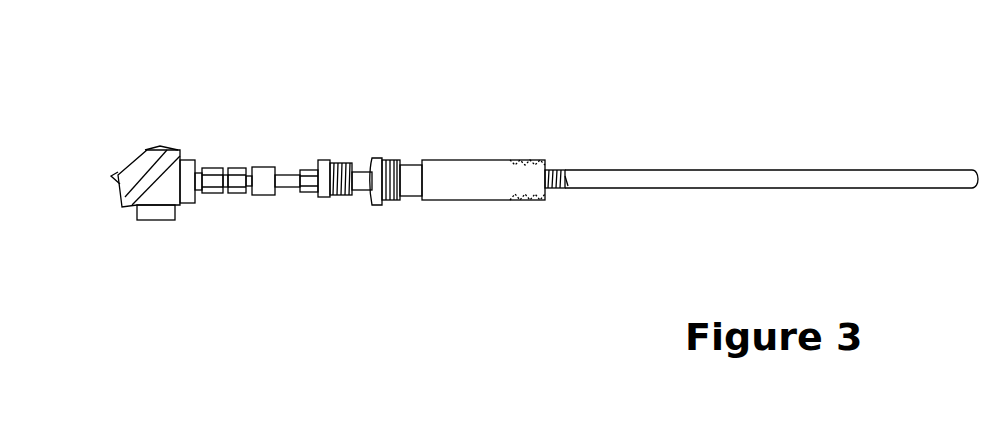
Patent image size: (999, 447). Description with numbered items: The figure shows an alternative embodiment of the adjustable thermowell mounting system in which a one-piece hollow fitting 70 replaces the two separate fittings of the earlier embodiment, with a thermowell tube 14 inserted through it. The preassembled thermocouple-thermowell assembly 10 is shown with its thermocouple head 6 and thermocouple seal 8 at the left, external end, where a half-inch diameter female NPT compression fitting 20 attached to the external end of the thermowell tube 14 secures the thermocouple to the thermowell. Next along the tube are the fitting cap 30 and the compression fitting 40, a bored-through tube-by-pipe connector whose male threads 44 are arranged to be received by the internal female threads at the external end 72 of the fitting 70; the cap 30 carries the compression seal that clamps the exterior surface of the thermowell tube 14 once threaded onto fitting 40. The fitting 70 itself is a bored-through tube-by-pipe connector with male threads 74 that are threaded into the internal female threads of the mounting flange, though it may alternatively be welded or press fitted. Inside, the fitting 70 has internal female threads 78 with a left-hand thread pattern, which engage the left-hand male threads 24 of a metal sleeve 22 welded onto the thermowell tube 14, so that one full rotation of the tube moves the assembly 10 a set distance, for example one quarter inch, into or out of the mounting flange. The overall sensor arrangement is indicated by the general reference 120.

The thermocouple head 6 is at (147, 148).
The thermocouple seal 8 is at (230, 160).
The thermocouple-thermowell assembly 10 is at (262, 279).
The thermowell tube 14 is at (786, 170).
The female NPT compression fitting 20 is at (260, 195).
The metal sleeve 22 is at (568, 178).
The male threads 24 is at (550, 170).
The fitting cap 30 is at (295, 162).
The compression fitting 40 is at (320, 198).
The male threads 44 is at (345, 198).
The one-piece hollow fitting 70 is at (434, 200).
The external end 72 is at (374, 157).
The male threads 74 is at (389, 200).
The internal female threads 78 is at (514, 168).
The sensor assembly 120 is at (515, 80).